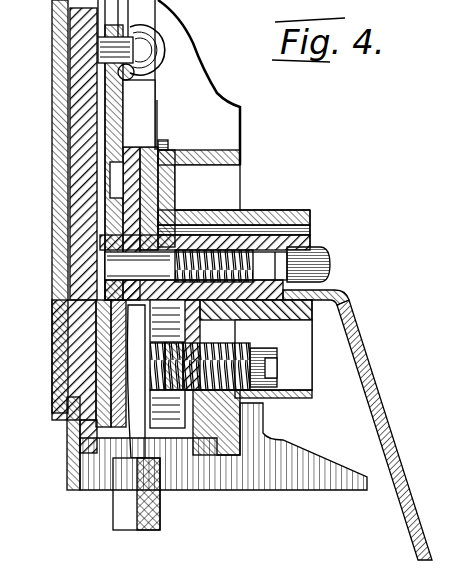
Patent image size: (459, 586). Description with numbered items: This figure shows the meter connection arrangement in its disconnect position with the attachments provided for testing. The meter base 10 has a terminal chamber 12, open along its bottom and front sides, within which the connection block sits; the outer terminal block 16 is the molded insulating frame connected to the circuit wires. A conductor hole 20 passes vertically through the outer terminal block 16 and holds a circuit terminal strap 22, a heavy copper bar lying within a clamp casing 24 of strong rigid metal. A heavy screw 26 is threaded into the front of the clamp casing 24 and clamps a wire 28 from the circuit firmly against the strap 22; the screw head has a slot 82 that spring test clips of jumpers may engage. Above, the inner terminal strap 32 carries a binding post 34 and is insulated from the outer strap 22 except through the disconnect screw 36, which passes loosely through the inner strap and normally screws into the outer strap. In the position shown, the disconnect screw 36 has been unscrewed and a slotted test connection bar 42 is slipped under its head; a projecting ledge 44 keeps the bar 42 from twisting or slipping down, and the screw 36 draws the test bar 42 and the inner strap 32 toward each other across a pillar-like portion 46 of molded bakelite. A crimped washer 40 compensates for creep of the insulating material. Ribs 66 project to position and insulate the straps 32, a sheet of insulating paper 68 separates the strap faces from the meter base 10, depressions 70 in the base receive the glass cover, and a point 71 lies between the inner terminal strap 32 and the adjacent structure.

The meter base 10 is at (62, 222).
The terminal chamber 12 is at (295, 210).
The outer terminal block 16 is at (50, 387).
The conductor holes 20 is at (193, 490).
The circuit terminal strap 22 is at (60, 326).
The clamp casing 24 is at (60, 360).
The heavy screw 26 is at (278, 380).
The wire 28 is at (128, 476).
The inner terminal strap 32 is at (157, 147).
The binding post 34 is at (155, 40).
The disconnect screw 36 is at (212, 222).
The crimped washer 40 is at (176, 278).
The test connection bar 42 is at (362, 348).
The projecting ledge 44 is at (300, 328).
The pillar-like portion 46 is at (318, 292).
The ribs 66 is at (148, 85).
The insulating paper 68 is at (168, 147).
The depressions 70 is at (180, 178).
The point 71 is at (115, 176).
The slot 82 is at (275, 345).